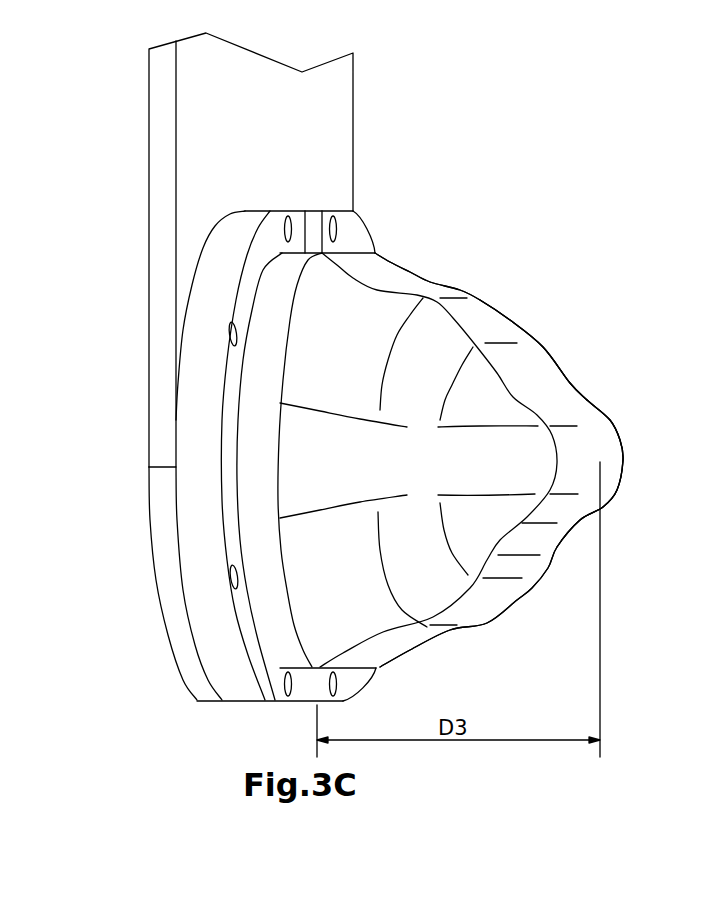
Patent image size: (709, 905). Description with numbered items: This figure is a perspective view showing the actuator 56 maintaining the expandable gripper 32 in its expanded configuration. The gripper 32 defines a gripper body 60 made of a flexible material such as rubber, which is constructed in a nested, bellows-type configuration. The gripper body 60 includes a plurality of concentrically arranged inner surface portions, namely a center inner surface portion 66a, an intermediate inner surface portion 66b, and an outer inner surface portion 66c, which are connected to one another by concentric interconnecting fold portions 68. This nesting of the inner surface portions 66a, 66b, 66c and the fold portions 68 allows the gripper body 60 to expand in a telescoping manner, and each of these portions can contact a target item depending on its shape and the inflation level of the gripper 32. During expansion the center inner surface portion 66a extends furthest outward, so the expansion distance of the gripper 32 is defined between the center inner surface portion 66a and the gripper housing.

The actuator 56 is at (190, 248).
The center inner surface portion 66a is at (595, 450).
The intermediate inner surface portion 66b is at (483, 320).
The outer inner surface portion 66c is at (280, 277).
The interconnecting fold portion 68 is at (387, 283).
The expandable gripper 32 is at (448, 632).
The gripper body 60 is at (499, 460).